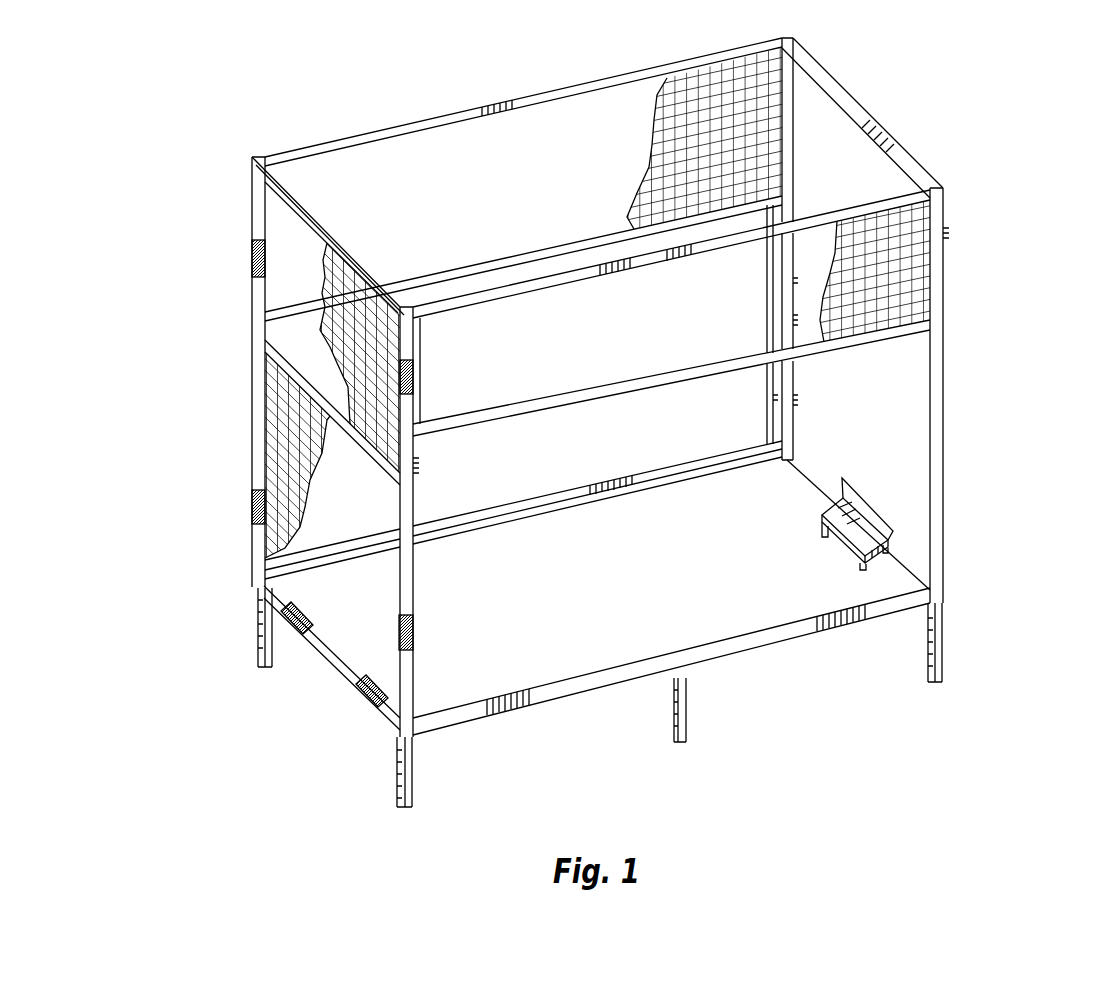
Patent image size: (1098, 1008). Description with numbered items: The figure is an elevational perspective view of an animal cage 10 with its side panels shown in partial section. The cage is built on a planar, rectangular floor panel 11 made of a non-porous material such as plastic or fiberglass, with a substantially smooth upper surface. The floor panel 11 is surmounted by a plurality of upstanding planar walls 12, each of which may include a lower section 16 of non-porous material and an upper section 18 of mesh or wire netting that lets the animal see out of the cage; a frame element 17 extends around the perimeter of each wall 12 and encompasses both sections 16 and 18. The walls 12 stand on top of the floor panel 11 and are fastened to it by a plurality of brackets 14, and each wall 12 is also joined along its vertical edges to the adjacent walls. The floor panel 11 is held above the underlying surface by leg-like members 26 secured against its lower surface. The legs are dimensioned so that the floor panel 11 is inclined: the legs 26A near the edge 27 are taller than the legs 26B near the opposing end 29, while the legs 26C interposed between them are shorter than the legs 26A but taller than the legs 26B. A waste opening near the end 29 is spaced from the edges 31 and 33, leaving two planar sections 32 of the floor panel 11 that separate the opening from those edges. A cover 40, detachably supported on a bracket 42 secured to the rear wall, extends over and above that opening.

The animal cage 10 is at (947, 565).
The floor panel 11 is at (561, 607).
The wall panel 12 is at (403, 122).
The bracket 14 is at (251, 258).
The wall section 16 is at (606, 447).
The frame element 17 is at (373, 138).
The mesh section 18 is at (652, 134).
The leg-like member 26 is at (397, 766).
The leg 26A is at (258, 640).
The leg 26B is at (943, 672).
The leg 26C is at (688, 704).
The edge of floor panel 27 is at (325, 637).
The opposing end of floor panel 29 is at (793, 468).
The edge of floor panel 31 is at (637, 495).
The planar section 32 is at (788, 497).
The edge of floor panel 33 is at (750, 640).
The cover 40 is at (842, 479).
The bracket 42 is at (866, 505).